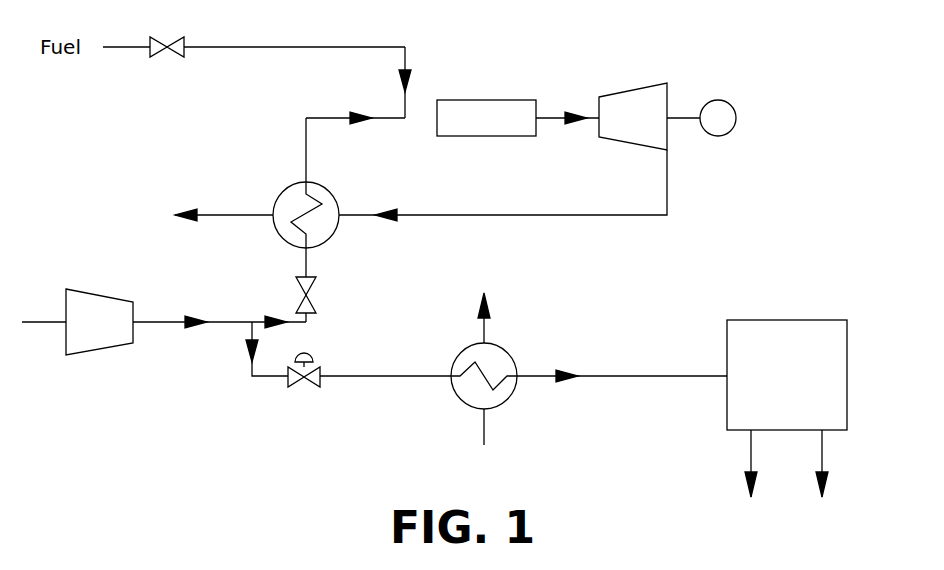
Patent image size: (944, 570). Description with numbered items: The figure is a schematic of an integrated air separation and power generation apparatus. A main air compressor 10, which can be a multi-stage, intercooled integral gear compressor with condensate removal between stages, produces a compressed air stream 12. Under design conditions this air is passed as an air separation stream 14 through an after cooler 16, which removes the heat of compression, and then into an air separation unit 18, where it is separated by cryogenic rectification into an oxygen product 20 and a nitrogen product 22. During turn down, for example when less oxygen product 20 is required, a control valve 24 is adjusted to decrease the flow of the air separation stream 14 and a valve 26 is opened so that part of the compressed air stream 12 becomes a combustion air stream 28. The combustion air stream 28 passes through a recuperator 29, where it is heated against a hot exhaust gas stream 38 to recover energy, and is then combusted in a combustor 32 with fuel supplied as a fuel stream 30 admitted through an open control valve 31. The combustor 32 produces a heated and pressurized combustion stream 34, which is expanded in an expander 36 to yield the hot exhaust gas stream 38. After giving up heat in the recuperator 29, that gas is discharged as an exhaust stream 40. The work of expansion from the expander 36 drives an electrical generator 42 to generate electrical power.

The main air compressor 10 is at (107, 338).
The compressed air stream 12 is at (211, 323).
The air separation stream 14 is at (393, 376).
The after cooler 16 is at (470, 396).
The air separation unit 18 is at (712, 418).
The oxygen product 20 is at (748, 463).
The nitrogen product 22 is at (823, 460).
The control valve 24 is at (297, 386).
The valve 26 is at (318, 301).
The combustion air stream 28 is at (306, 148).
The recuperator 29 is at (330, 198).
The fuel stream 30 is at (312, 46).
The control valve 31 is at (173, 41).
The combustor 32 is at (472, 124).
The heated and pressurized combustion stream 34 is at (558, 118).
The expander 36 is at (636, 110).
The hot exhaust gas stream 38 is at (565, 218).
The exhaust stream 40 is at (234, 215).
The electrical generator 42 is at (722, 108).